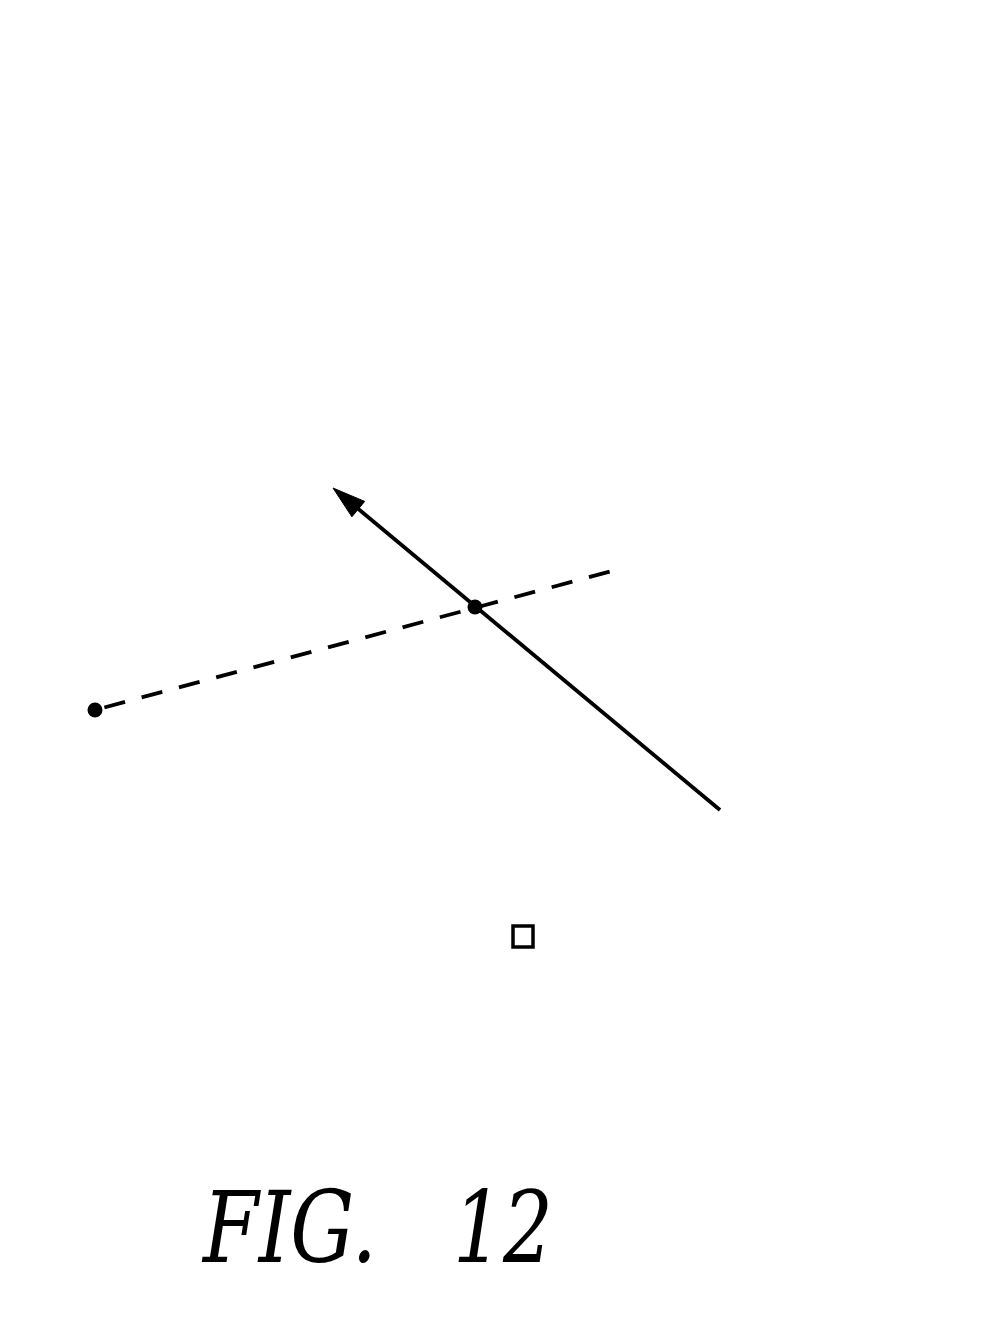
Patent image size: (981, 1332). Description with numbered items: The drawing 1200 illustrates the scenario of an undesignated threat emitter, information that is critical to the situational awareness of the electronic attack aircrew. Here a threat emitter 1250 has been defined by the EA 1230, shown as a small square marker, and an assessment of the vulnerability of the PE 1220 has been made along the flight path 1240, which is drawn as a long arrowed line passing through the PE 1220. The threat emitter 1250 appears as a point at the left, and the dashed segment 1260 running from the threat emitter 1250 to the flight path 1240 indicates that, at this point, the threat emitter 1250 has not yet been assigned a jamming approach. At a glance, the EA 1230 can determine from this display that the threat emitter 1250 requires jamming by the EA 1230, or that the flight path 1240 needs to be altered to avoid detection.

The geometric construction diagram 1200 is at (186, 422).
The PE 1220 is at (480, 612).
The EA 1230 is at (525, 925).
The flight path 1240 is at (661, 757).
The threat emitter 1250 is at (95, 710).
The dashed segment 1260 is at (517, 598).